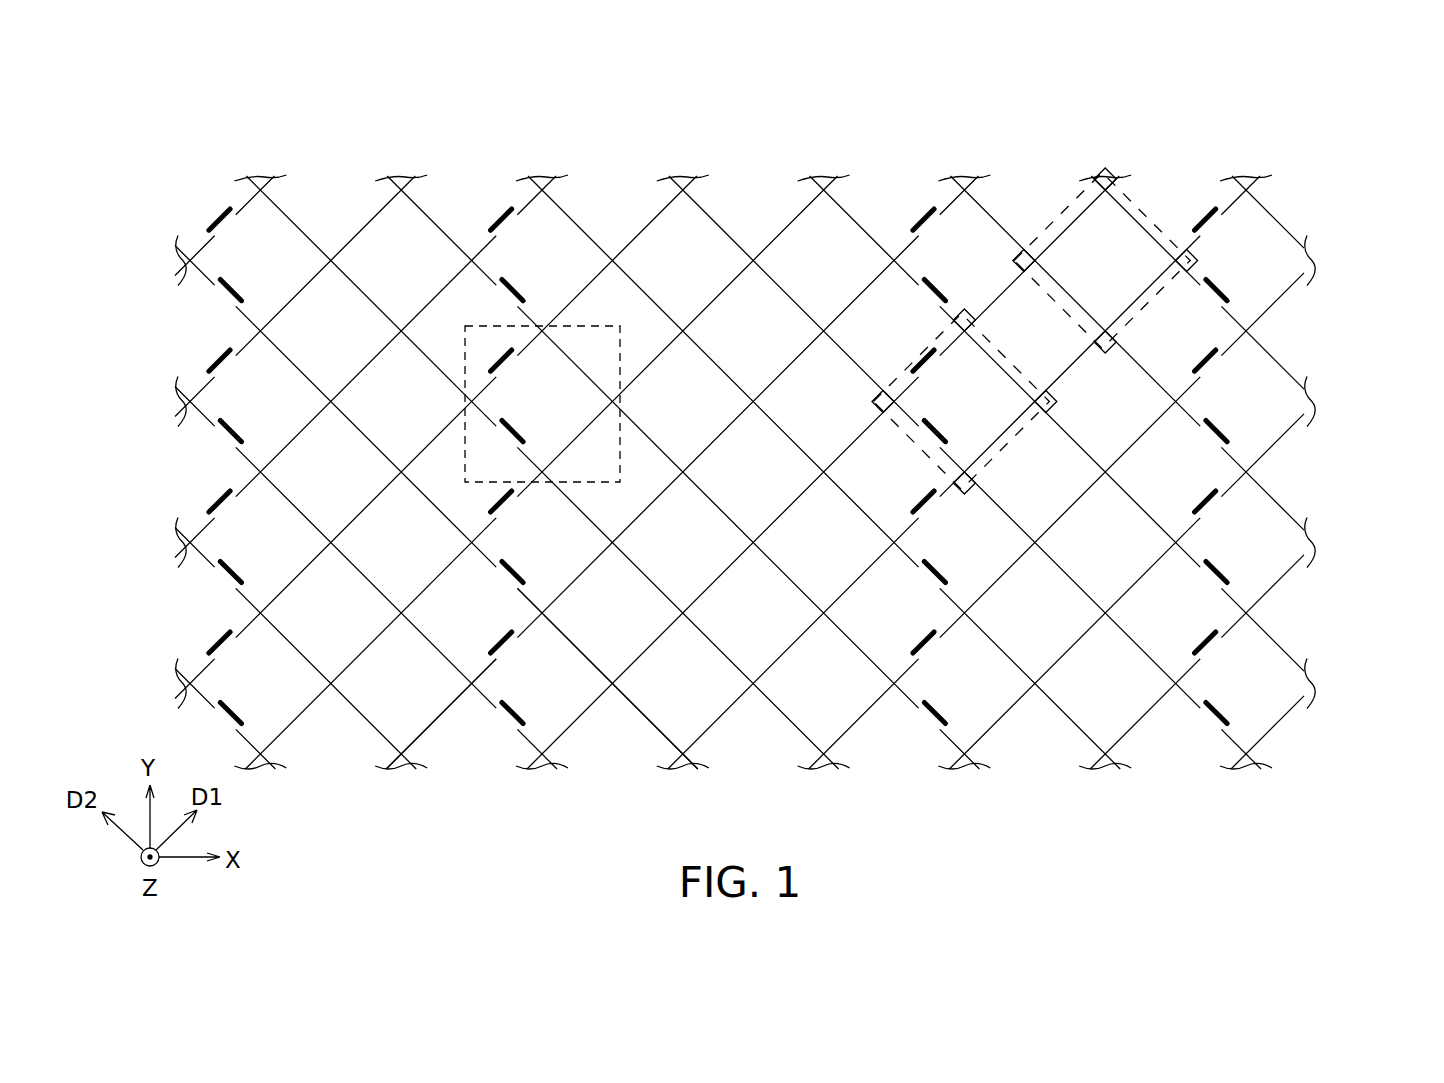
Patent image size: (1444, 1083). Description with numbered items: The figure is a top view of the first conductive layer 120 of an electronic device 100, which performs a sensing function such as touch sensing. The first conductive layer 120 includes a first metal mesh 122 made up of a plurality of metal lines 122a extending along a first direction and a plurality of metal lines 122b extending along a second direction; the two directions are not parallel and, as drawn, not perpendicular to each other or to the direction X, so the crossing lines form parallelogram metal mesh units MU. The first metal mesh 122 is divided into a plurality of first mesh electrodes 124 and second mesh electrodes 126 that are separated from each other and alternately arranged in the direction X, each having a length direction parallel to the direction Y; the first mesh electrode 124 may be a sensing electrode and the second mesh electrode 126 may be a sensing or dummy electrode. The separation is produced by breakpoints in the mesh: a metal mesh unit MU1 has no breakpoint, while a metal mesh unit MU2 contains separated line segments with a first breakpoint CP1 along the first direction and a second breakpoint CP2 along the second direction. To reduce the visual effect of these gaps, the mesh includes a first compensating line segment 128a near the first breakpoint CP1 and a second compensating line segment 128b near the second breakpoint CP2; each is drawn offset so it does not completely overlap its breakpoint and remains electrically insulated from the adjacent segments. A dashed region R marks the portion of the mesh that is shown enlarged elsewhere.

The electronic device 100 is at (805, 445).
The first conductive layer 120 is at (805, 445).
The first metal mesh 122 is at (739, 445).
The metal lines 122a is at (443, 720).
The metal lines 122b is at (641, 720).
The first mesh electrode 124 is at (759, 126).
The second mesh electrode 126 is at (348, 126).
The first compensating line segment 128a is at (712, 466).
The second compensating line segment 128b is at (723, 484).
The first breakpoint CP1 is at (951, 667).
The second breakpoint CP2 is at (917, 748).
The metal mesh unit MU is at (1137, 331).
The metal mesh unit without breakpoint MU1 is at (1151, 312).
The metal mesh unit with breakpoint MU2 is at (1029, 440).
The region R is at (593, 326).